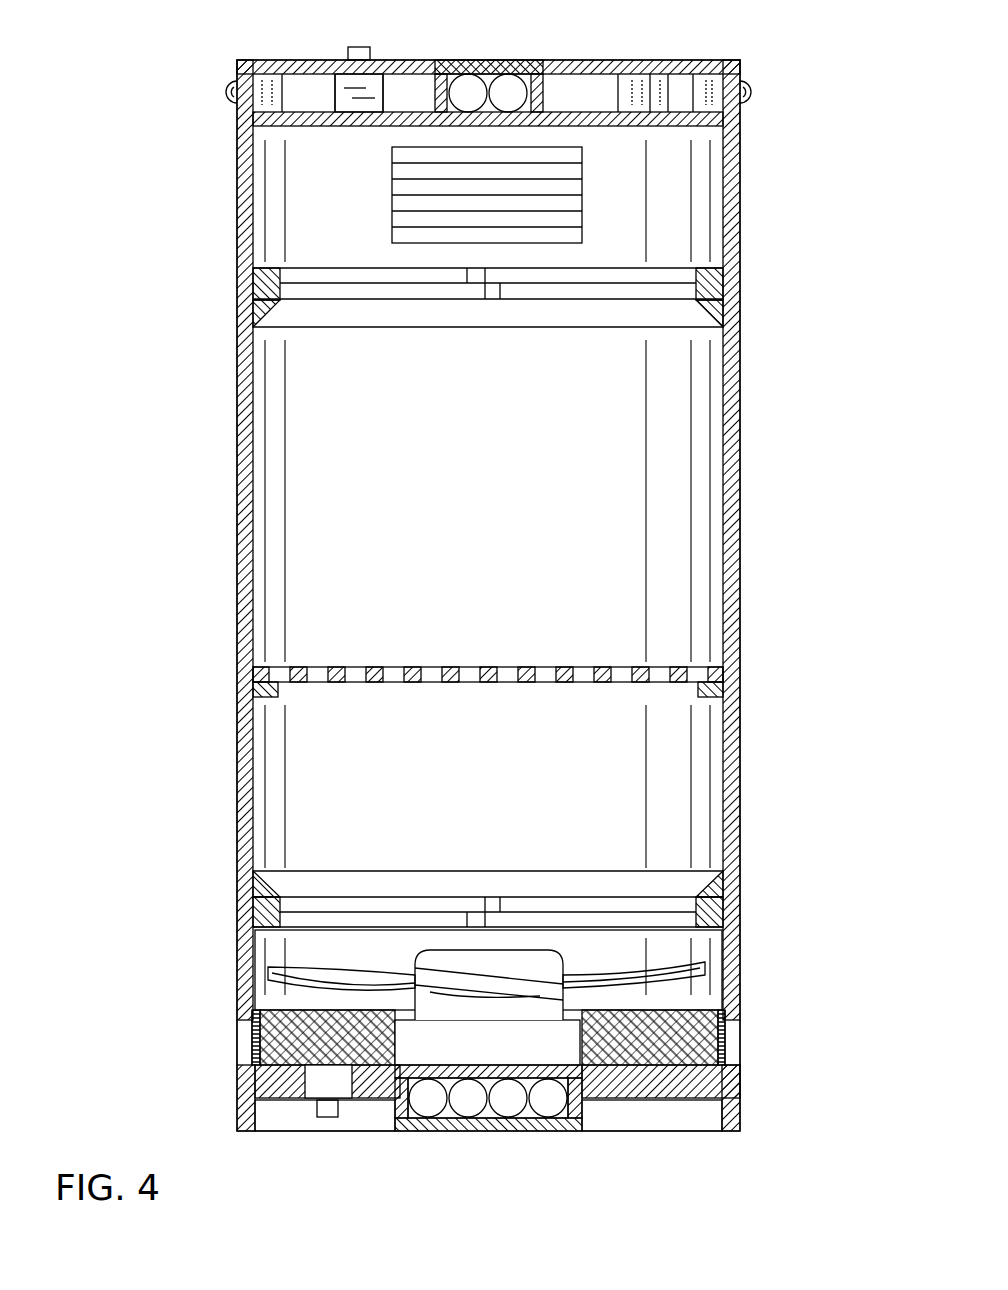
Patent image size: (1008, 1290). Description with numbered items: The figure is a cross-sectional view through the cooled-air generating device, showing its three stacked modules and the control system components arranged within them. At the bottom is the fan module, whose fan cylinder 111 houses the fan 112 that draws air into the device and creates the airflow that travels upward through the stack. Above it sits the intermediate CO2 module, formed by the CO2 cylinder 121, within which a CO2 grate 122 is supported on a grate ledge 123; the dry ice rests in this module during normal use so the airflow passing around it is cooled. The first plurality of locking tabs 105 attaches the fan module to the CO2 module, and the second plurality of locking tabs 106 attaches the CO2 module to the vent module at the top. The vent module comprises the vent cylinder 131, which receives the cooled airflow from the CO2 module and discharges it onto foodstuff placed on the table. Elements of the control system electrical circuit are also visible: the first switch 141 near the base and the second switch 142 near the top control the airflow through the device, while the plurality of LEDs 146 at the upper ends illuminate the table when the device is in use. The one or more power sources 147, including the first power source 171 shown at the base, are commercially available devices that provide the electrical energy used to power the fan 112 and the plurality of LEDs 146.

The first plurality of locking tabs 105 is at (280, 897).
The second plurality of locking tabs 106 is at (280, 303).
The fan cylinder 111 is at (248, 960).
The fan 112 is at (678, 975).
The CO2 cylinder 121 is at (243, 540).
The CO2 grate 122 is at (522, 665).
The grate ledge 123 is at (268, 697).
The vent cylinder 131 is at (740, 170).
The first switch 141 is at (328, 1118).
The second switch 142 is at (370, 90).
The plurality of LEDs 146 is at (226, 93).
The one or more power sources 147 is at (515, 62).
The first power source 171 is at (553, 1131).